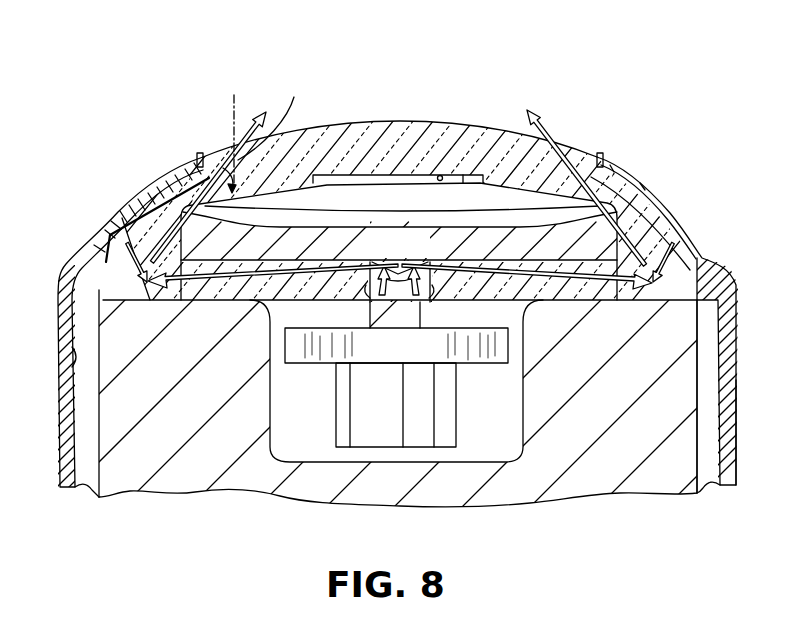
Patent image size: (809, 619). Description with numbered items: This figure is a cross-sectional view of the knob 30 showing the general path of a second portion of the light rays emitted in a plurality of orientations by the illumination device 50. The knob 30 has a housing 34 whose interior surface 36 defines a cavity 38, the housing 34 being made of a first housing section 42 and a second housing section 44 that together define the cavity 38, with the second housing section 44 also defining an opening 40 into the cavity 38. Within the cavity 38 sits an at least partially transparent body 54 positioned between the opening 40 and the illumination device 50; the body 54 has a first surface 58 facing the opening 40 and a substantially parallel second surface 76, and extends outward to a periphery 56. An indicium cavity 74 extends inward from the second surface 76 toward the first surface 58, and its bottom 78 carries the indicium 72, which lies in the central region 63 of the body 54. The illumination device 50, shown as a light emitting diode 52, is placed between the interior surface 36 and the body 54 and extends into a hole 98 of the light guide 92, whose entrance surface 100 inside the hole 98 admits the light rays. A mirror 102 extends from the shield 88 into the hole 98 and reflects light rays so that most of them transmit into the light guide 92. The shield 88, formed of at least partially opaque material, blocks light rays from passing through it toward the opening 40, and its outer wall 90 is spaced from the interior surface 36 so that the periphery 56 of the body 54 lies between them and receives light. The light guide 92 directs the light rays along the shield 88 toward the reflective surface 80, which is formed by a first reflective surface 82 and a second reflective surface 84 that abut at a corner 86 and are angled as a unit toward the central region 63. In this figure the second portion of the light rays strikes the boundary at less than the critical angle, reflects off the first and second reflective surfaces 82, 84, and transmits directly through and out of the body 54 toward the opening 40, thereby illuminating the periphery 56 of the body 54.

The knob 30 is at (50, 118).
The housing 34 is at (695, 327).
The interior surface 36 is at (722, 296).
The cavity 38 is at (62, 405).
The opening 40 is at (200, 152).
The first housing section 42 is at (736, 437).
The second housing section 44 is at (615, 160).
The illumination device 50 is at (386, 302).
The light emitting diode 52 is at (408, 302).
The body 54 is at (540, 120).
The periphery 56 is at (140, 200).
The first surface 58 is at (232, 148).
The central region 63 is at (389, 124).
The indicium 72 is at (337, 175).
The indicium cavity 74 is at (462, 178).
The second surface 76 is at (294, 186).
The bottom 78 is at (440, 175).
The reflective surface 80 is at (124, 228).
The first reflective surface 82 is at (146, 283).
The second reflective surface 84 is at (108, 235).
The corner 86 is at (110, 263).
The shield 88 is at (412, 232).
The outer wall 90 is at (617, 243).
The light guide 92 is at (568, 290).
The hole 98 is at (427, 300).
The entrance surface 100 is at (372, 300).
The mirror 102 is at (397, 262).